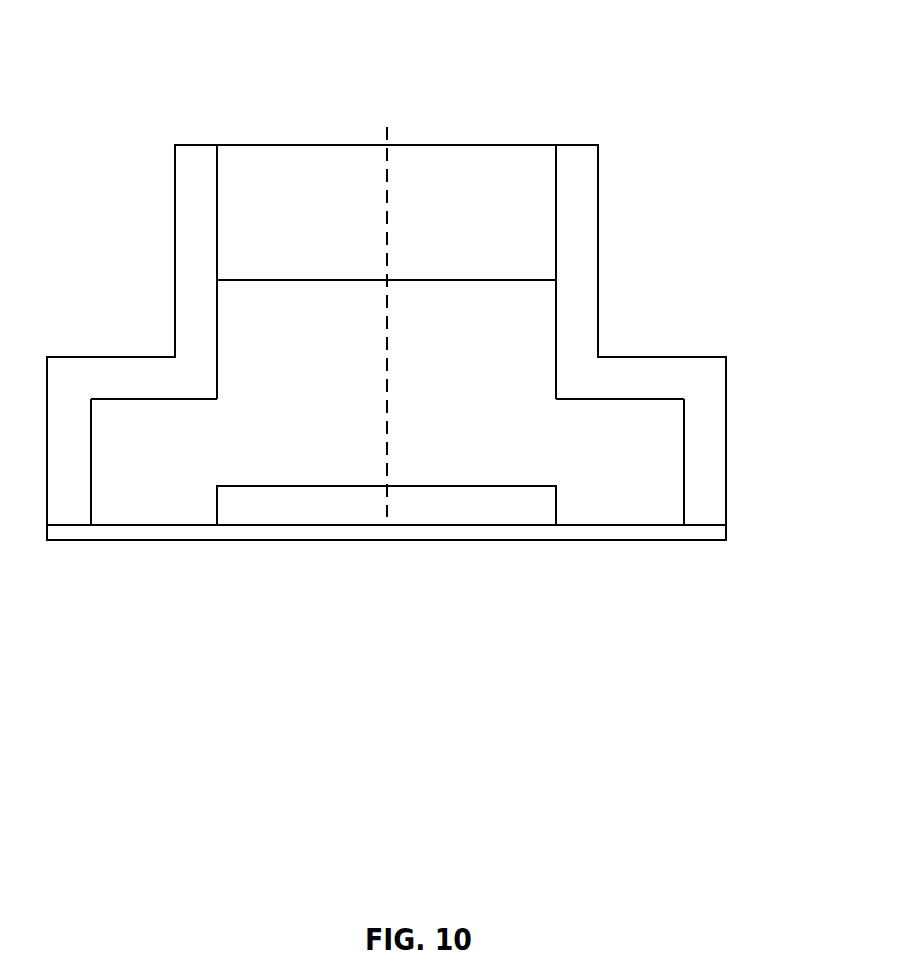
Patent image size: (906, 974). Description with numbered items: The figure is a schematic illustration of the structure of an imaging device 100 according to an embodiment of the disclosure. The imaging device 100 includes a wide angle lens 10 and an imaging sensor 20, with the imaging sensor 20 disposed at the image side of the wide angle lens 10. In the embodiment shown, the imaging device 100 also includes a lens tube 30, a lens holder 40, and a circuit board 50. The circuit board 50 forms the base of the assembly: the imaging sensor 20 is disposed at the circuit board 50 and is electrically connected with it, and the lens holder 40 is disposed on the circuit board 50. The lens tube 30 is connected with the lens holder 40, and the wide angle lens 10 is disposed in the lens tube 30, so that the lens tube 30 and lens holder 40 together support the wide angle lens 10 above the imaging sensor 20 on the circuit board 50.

The imaging device 100 is at (178, 116).
The wide angle lens 10 is at (462, 170).
The imaging sensor 20 is at (242, 512).
The lens tube 30 is at (577, 314).
The lens holder 40 is at (698, 472).
The circuit board 50 is at (478, 532).